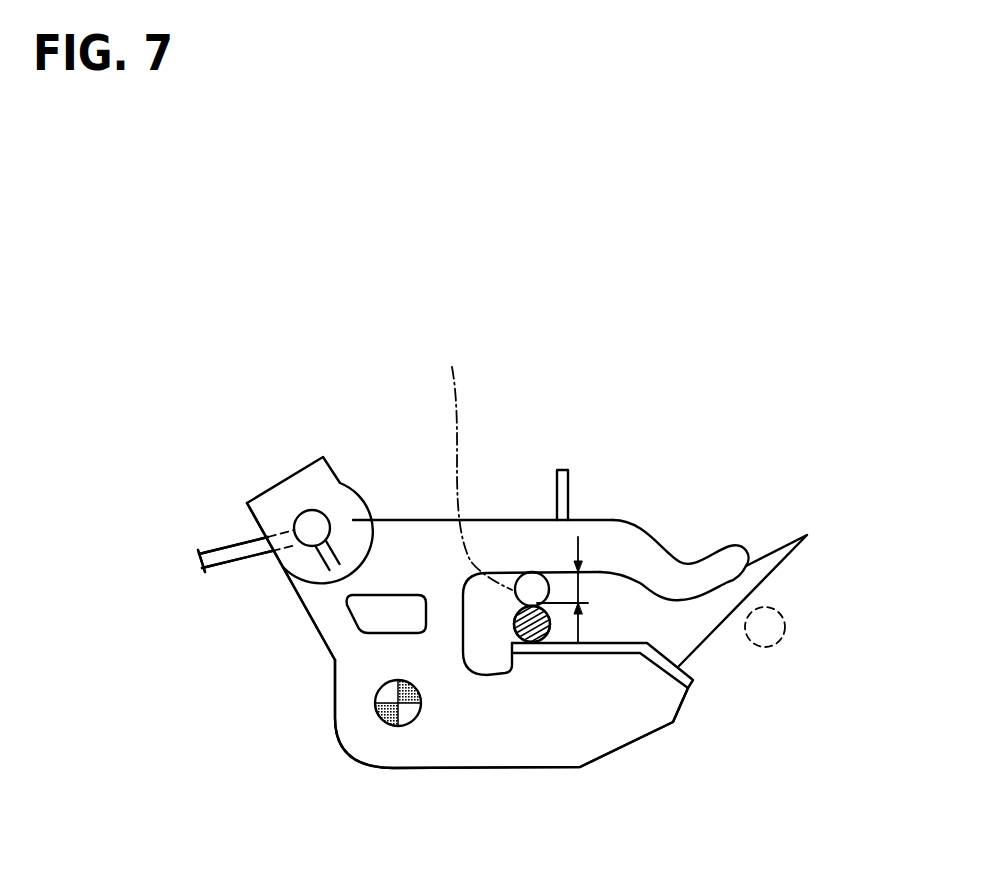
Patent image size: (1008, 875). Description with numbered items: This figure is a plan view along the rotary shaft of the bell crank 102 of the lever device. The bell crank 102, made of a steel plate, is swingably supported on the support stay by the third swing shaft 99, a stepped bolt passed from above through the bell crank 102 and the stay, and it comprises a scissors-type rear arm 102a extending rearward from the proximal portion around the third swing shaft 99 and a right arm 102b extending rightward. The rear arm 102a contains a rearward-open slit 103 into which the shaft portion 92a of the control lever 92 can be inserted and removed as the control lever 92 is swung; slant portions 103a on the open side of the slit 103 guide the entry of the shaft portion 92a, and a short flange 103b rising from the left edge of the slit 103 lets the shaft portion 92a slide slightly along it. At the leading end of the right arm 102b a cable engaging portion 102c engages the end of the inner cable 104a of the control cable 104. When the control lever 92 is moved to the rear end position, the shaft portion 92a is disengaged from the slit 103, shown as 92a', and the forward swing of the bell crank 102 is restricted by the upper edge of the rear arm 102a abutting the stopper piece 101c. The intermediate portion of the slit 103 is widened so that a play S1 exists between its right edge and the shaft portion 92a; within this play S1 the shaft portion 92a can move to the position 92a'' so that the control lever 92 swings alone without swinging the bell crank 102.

The bell crank 102 is at (428, 519).
The rear arm 102a is at (514, 535).
The right arm 102b is at (317, 603).
The cable engaging portion 102c is at (307, 482).
The stopper piece 101c is at (557, 490).
The slit 103 is at (625, 608).
The slant portions 103a is at (805, 537).
The short flange 103b is at (613, 657).
The shaft portion 92a is at (575, 735).
The control lever 92 is at (532, 624).
The shaft portion disengaged position 92a' is at (786, 683).
The shaft portion spaced position 92a'' is at (485, 466).
The third swing shaft 99 is at (420, 727).
The inner cable 104a is at (233, 545).
The control cable 104 is at (235, 554).
The play S1 is at (588, 603).